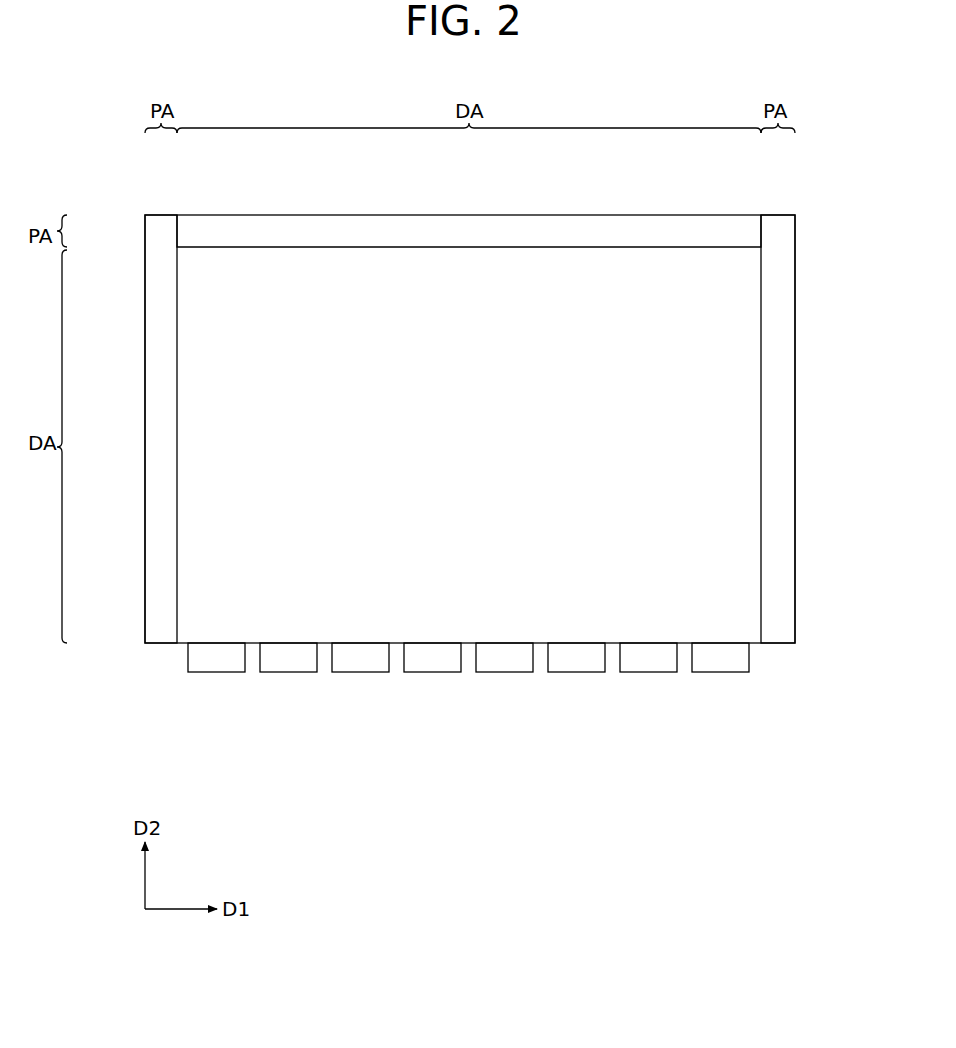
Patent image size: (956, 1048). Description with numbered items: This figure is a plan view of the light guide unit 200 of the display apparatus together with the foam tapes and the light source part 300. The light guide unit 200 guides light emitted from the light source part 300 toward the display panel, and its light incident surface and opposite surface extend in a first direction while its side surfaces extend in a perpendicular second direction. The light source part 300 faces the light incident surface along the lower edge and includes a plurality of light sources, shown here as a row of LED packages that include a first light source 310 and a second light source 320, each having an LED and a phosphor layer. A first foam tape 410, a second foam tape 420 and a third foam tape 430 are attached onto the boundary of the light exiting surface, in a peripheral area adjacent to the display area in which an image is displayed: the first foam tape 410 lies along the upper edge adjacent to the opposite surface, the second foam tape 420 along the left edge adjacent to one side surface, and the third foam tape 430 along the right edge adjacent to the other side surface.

The light guide unit 200 is at (700, 347).
The first foam tape 410 is at (467, 222).
The second foam tape 420 is at (150, 428).
The third foam tape 430 is at (790, 427).
The light source part 300 is at (468, 705).
The first light source 310 is at (215, 672).
The second light source 320 is at (288, 688).